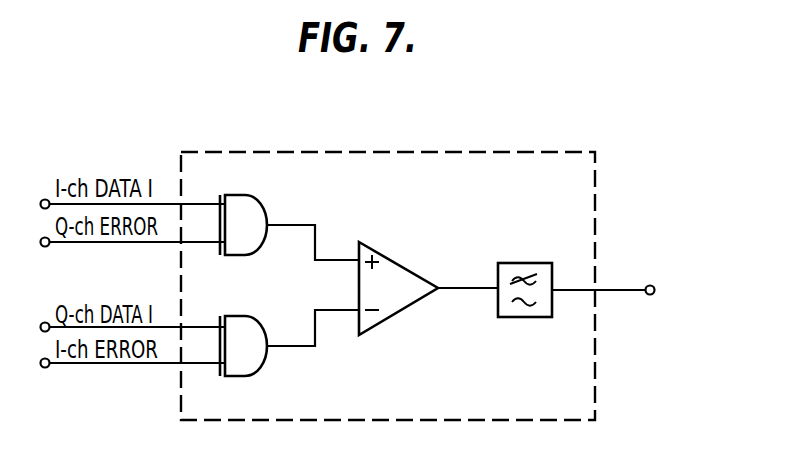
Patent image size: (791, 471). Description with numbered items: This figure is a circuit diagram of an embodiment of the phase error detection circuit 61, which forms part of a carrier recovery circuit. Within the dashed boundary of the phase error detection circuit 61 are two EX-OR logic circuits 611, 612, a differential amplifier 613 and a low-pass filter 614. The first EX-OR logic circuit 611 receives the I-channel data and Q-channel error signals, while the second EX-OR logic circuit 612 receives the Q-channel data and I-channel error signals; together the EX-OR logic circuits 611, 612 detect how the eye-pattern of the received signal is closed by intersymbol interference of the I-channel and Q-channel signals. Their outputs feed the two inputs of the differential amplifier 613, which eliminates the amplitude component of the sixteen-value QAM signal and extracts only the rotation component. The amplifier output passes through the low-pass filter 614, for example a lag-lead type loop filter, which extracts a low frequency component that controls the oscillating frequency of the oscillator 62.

The phase error detection circuit 61 is at (388, 151).
The EX-OR logic circuit 611 is at (240, 195).
The EX-OR logic circuit 612 is at (242, 316).
The differential amplifier 613 is at (408, 271).
The low-pass filter 614 is at (520, 317).
The oscillator 62 is at (665, 274).